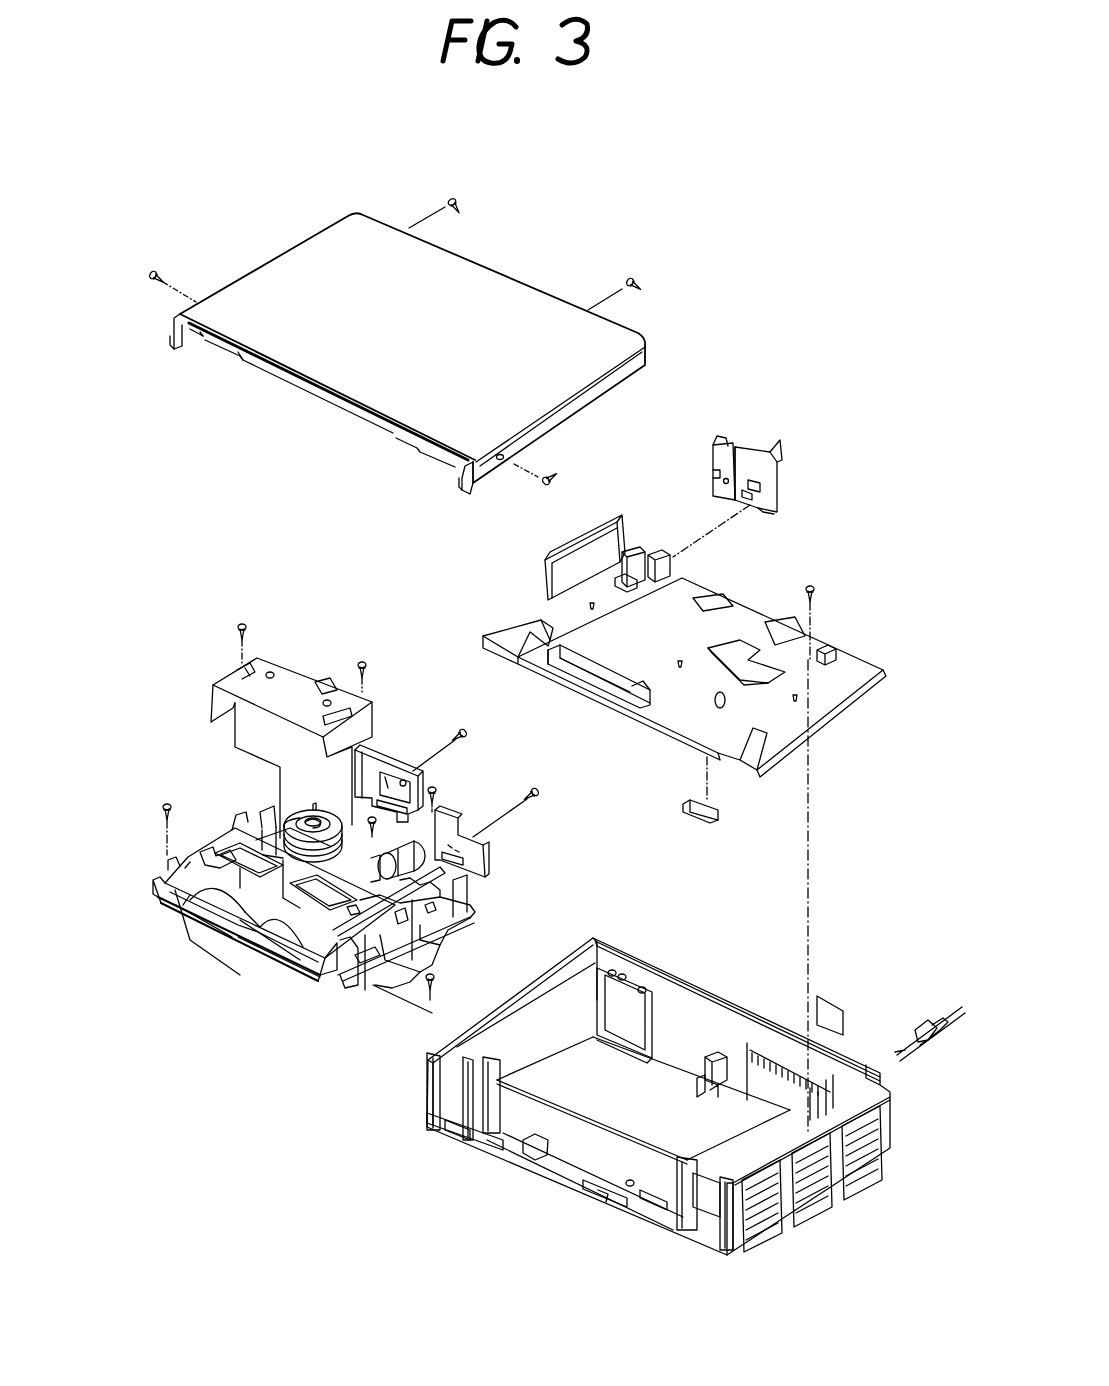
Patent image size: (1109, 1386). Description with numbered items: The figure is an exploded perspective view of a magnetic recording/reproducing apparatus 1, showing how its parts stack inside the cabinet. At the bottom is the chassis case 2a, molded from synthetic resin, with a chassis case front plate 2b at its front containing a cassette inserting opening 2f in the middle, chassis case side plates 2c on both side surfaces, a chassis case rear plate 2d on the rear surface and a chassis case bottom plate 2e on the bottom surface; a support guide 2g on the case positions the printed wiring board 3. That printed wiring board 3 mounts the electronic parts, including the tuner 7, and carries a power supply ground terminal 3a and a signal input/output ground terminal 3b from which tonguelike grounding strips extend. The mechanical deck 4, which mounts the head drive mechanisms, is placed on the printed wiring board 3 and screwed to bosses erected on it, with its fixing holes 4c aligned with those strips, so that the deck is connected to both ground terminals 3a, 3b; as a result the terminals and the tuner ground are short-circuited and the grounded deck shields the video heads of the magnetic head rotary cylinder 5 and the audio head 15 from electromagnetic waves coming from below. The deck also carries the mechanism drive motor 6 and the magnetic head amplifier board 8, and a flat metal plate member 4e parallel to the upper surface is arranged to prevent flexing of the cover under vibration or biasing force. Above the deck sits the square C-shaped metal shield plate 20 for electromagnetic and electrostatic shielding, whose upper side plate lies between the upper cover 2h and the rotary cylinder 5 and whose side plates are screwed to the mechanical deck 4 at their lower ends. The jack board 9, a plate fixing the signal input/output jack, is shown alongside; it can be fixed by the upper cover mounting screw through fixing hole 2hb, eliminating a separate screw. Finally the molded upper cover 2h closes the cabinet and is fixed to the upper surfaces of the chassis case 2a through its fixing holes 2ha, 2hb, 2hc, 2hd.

The magnetic recording/reproducing apparatus 1 is at (747, 381).
The chassis case 2a is at (866, 1020).
The chassis case front plate 2b is at (440, 1080).
The chassis case side plates 2c is at (550, 1000).
The chassis case rear plate 2d is at (717, 1013).
The chassis case bottom plate 2e is at (566, 1072).
The cassette inserting opening 2f is at (574, 1145).
The support guide 2g is at (716, 1062).
The upper cover 2h is at (500, 283).
The fixing hole 2ha is at (616, 310).
The fixing hole 2hb is at (405, 222).
The fixing hole 2hc is at (513, 452).
The fixing hole 2hd is at (203, 292).
The printed wiring board 3 is at (828, 734).
The power supply ground terminal 3a is at (838, 655).
The signal input/output ground terminal 3b is at (633, 550).
The mechanical deck 4 is at (256, 960).
The fixing holes 4c is at (208, 812).
The metal plate member 4e is at (238, 933).
The magnetic head rotary cylinder 5 is at (303, 808).
The mechanism drive motor 6 is at (413, 853).
The tuner 7 is at (556, 556).
The magnetic head amplifier board 8 is at (417, 773).
The jack board 9 is at (780, 462).
The audio head 15 is at (333, 806).
The shield plate 20 is at (294, 683).